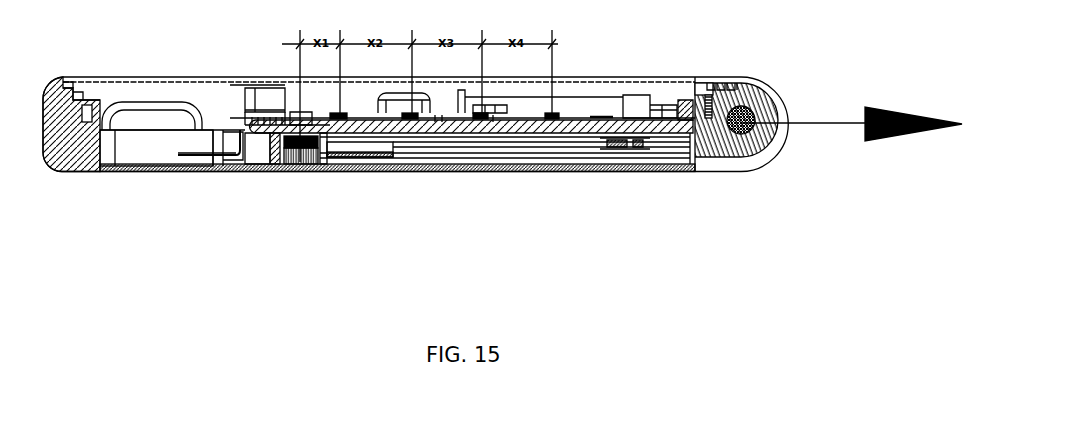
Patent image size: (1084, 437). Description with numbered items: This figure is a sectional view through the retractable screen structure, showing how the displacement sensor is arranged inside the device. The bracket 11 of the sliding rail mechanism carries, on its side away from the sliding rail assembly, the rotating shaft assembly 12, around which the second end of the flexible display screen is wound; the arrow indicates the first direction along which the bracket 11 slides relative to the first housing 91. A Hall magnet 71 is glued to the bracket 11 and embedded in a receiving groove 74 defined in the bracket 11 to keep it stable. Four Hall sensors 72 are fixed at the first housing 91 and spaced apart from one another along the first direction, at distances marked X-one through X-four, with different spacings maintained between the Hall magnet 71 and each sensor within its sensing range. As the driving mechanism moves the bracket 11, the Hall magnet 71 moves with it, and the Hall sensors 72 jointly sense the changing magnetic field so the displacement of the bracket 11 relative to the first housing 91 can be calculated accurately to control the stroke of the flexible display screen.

The bracket 11 is at (667, 153).
The rotating shaft assembly 12 is at (741, 118).
The Hall magnet 71 is at (303, 160).
The Hall sensors 72 is at (340, 119).
The receiving groove 74 is at (288, 150).
The first housing 91 is at (138, 148).